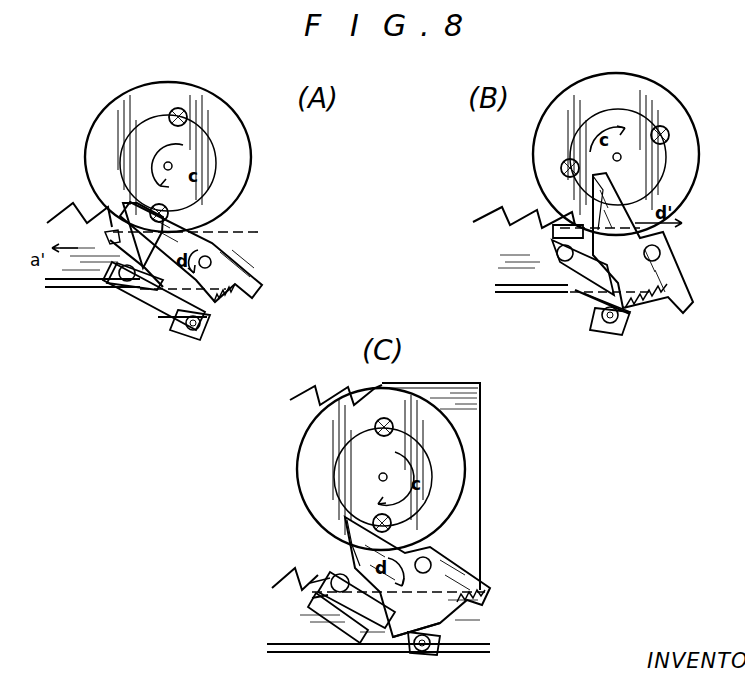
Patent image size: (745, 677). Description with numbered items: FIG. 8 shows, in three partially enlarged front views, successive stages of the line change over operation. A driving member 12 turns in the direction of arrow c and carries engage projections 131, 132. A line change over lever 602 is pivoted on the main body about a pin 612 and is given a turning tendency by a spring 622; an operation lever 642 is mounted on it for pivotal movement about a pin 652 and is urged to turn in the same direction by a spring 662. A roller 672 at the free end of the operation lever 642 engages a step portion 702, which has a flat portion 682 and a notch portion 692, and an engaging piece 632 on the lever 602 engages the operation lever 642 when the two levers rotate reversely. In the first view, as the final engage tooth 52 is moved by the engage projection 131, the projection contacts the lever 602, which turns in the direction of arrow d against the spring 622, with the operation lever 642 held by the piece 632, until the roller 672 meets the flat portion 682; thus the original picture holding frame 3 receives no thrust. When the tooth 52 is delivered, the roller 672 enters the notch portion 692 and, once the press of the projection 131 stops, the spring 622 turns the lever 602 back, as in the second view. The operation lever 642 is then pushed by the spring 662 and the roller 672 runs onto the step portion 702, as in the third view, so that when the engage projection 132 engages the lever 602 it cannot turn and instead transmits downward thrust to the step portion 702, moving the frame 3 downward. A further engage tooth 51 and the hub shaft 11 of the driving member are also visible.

The original picture holding frame 3 is at (483, 480).
The hub shaft 11 is at (173, 168).
The driving member 12 is at (227, 125).
The spring 51 is at (308, 415).
The final engage tooth 52 is at (108, 220).
The engage projection 131 is at (170, 213).
The engage projection 132 is at (178, 108).
The line change over lever 602 is at (240, 252).
The pin 612 is at (258, 280).
The spring 622 is at (238, 296).
The engaging piece 632 is at (165, 250).
The operation lever 642 is at (167, 303).
The pin 652 is at (210, 333).
The spring 662 is at (197, 337).
The roller 672 is at (155, 256).
The flat portion 682 is at (50, 285).
The notch portion 692 is at (120, 282).
The step portion 702 is at (118, 242).